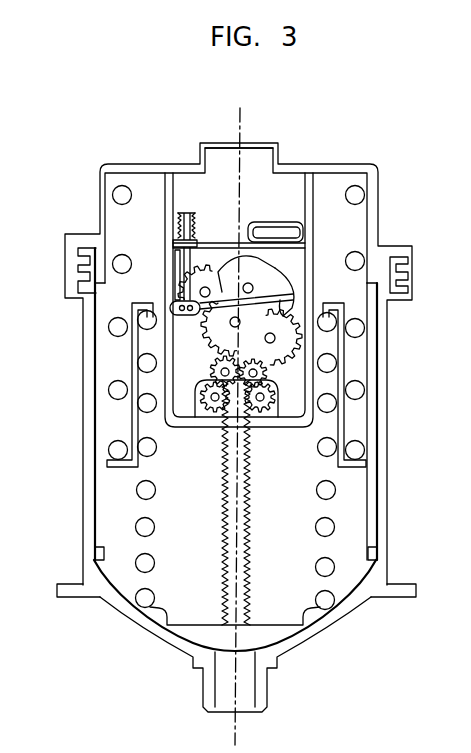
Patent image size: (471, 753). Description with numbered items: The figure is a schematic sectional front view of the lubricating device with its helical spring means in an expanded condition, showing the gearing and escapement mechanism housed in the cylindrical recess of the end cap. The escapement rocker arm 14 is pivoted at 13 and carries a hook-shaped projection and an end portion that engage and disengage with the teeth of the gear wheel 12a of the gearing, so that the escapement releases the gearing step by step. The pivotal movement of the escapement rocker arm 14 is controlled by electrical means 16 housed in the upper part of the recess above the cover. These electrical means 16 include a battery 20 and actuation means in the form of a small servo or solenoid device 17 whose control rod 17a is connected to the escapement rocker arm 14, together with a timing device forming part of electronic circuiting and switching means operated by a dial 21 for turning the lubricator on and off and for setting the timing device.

The dial 21 is at (287, 152).
The electrical means 16 is at (281, 207).
The servo or solenoid device 17 is at (203, 231).
The control rod 17a is at (188, 284).
The battery 20 is at (280, 236).
The gear wheel 12a is at (257, 267).
The pivot 13 is at (275, 305).
The escapement rocker arm 14 is at (212, 318).